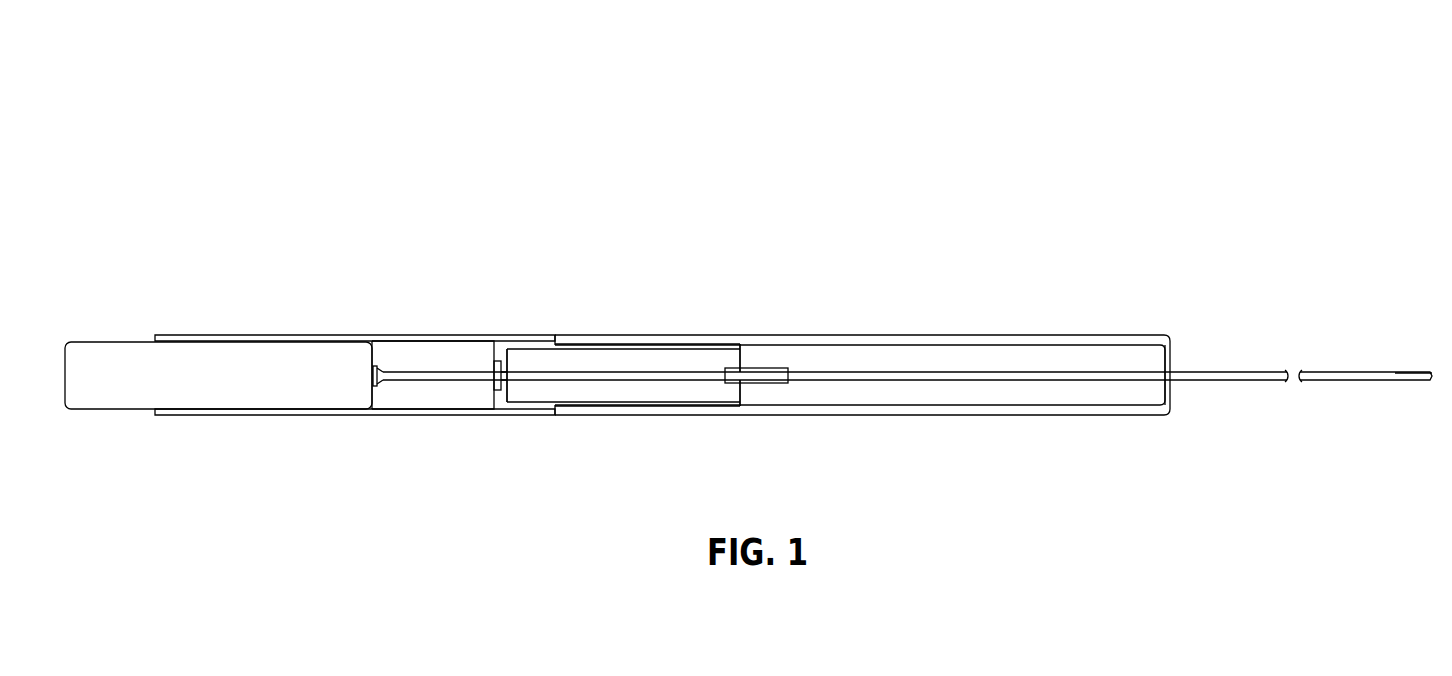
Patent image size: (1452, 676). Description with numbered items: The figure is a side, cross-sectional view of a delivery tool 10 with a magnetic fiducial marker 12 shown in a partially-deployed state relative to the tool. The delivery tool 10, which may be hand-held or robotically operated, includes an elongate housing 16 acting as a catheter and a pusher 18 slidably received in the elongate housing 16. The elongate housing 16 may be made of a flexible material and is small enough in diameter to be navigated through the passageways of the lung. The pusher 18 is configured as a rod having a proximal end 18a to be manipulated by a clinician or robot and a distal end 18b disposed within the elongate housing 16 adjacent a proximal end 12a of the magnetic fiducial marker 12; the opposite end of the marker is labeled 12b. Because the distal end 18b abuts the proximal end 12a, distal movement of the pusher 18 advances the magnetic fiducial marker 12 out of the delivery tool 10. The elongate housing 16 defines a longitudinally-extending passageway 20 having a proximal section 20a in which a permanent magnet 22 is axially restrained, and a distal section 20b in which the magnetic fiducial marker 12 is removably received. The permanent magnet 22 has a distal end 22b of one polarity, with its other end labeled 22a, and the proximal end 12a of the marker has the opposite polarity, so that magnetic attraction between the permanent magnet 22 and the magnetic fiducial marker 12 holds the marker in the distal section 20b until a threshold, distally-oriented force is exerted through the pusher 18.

The delivery tool 10 is at (276, 126).
The magnetic fiducial marker 12 is at (124, 334).
The proximal end of the magnetic fiducial marker 12a is at (364, 342).
The proximal end cap of outer tube 12b is at (91, 341).
The elongate housing 16 is at (765, 326).
The pusher 18 is at (1211, 384).
The proximal end of the pusher 18a is at (1404, 372).
The distal end of the pusher 18b is at (445, 370).
The passageway 20 is at (1157, 358).
The proximal section of the passageway 20a is at (797, 393).
The distal section of the passageway 20b is at (428, 396).
The permanent magnet 22 is at (605, 350).
The distal end of sleeve 22a is at (712, 360).
The distal end of the permanent magnet 22b is at (537, 360).